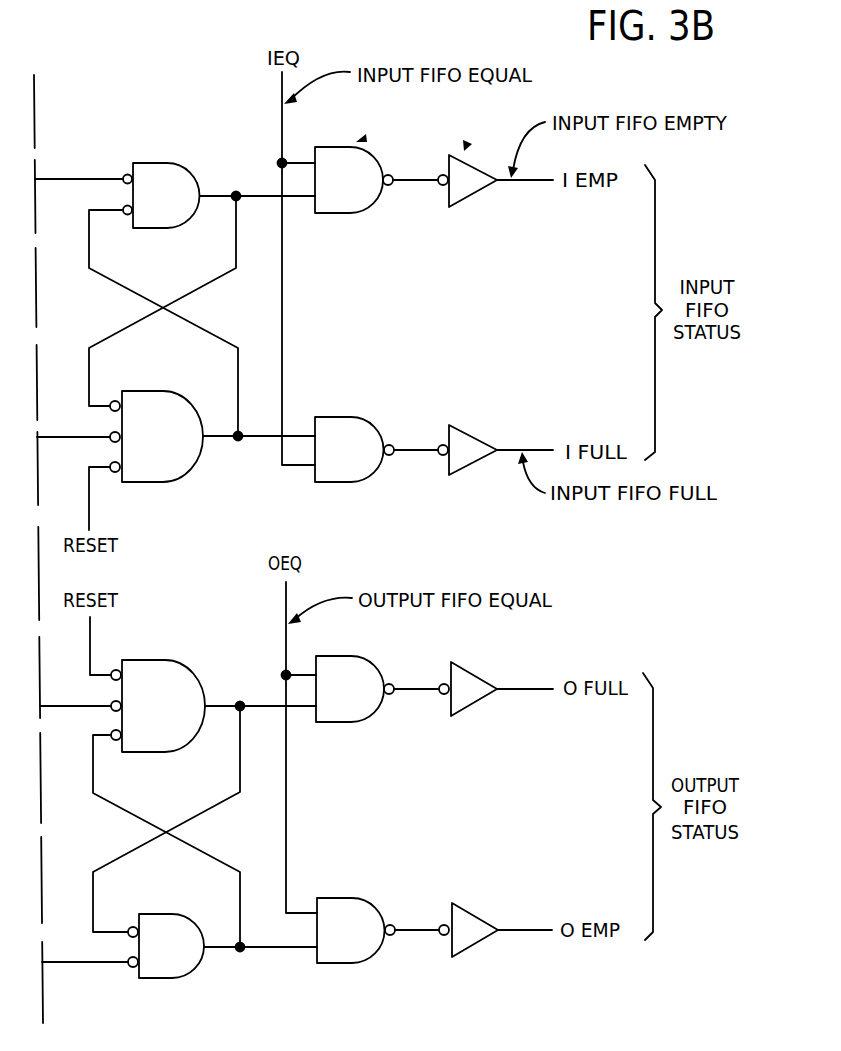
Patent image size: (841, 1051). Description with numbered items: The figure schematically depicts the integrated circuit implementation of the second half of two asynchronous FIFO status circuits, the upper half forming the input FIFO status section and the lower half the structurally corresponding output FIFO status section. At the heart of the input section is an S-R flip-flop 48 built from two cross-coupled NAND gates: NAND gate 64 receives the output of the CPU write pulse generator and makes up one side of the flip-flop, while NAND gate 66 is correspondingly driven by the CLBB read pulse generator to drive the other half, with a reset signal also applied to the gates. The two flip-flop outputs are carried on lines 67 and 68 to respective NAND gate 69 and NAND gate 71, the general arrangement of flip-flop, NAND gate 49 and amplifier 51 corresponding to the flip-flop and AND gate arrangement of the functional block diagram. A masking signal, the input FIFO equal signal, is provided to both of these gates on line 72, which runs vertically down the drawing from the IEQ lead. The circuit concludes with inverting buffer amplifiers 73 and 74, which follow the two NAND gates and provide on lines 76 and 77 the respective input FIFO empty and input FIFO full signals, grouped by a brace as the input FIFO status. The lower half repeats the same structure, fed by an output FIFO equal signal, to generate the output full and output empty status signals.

The S-R flip-flop 48 is at (136, 148).
The NAND gate 49 is at (360, 138).
The amplifier 51 is at (466, 146).
The NAND gate 64 is at (172, 172).
The NAND gate 66 is at (172, 400).
The line 67 is at (256, 190).
The line 68 is at (262, 440).
The NAND gate 69 is at (353, 203).
The NAND gate 71 is at (340, 425).
The line 72 is at (284, 303).
The inverting buffer amplifier 73 is at (468, 195).
The inverting buffer amplifier 74 is at (468, 440).
The line 76 is at (537, 183).
The line 77 is at (512, 448).